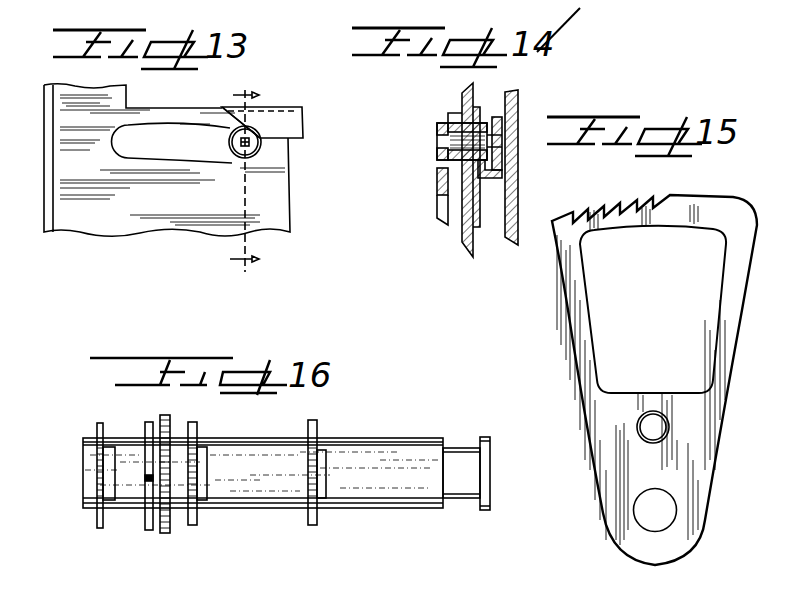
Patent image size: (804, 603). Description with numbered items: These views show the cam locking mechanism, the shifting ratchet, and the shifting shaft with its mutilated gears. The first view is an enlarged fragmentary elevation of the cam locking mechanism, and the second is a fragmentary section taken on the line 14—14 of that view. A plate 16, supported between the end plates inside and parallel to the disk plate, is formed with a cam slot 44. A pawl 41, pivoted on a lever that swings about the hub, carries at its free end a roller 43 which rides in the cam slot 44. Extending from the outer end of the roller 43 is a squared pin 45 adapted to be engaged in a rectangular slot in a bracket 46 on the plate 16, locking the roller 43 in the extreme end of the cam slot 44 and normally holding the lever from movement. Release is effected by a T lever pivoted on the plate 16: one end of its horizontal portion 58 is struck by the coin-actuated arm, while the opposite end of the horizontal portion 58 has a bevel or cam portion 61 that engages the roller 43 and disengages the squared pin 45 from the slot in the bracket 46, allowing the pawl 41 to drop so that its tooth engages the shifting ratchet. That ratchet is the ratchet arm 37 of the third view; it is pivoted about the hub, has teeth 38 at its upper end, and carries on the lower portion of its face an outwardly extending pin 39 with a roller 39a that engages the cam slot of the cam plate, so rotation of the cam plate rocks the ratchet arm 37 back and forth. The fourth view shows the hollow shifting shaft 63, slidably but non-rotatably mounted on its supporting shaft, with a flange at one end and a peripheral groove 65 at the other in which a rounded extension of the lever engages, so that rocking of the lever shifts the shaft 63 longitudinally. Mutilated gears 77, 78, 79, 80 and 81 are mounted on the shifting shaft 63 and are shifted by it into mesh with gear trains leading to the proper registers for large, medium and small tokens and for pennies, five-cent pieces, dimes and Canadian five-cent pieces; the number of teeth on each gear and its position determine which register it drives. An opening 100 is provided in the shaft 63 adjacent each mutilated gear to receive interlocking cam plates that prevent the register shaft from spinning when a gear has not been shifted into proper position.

In FIG. 13, the section line 14— 14 is at (227, 178).
In FIG. 13, the plate 16 is at (167, 160).
In FIG. 14, the plate 16 is at (473, 243).
In FIG. 15, the ratchet arm 37 is at (720, 384).
In FIG. 15, the teeth 38 is at (602, 189).
In FIG. 15, the pin 39 is at (653, 427).
In FIG. 15, the roller 39a is at (654, 410).
In FIG. 14, the pawl 41 is at (437, 152).
In FIG. 13, the roller 43 is at (253, 148).
In FIG. 14, the roller 43 is at (462, 123).
In FIG. 13, the cam slot 44 is at (130, 142).
In FIG. 13, the squared pin 45 is at (253, 142).
In FIG. 14, the squared pin 45 is at (495, 135).
In FIG. 14, the bracket 46 is at (483, 180).
In FIG. 13, the horizontal portion of T lever 58 is at (290, 127).
In FIG. 14, the horizontal portion of T lever 58 is at (422, 215).
In FIG. 13, the bevel or cam portion 61 is at (240, 123).
In FIG. 14, the bevel or cam portion 61 is at (440, 168).
In FIG. 16, the hollow shifting shaft 63 is at (397, 453).
In FIG. 16, the peripheral groove 65 is at (460, 453).
In FIG. 16, the mutilated gear 77 is at (312, 522).
In FIG. 16, the mutilated gear 78 is at (193, 523).
In FIG. 16, the mutilated gear 79 is at (163, 532).
In FIG. 16, the mutilated gear 80 is at (150, 523).
In FIG. 16, the mutilated gear 81 is at (100, 515).
In FIG. 16, the opening 100 is at (320, 460).